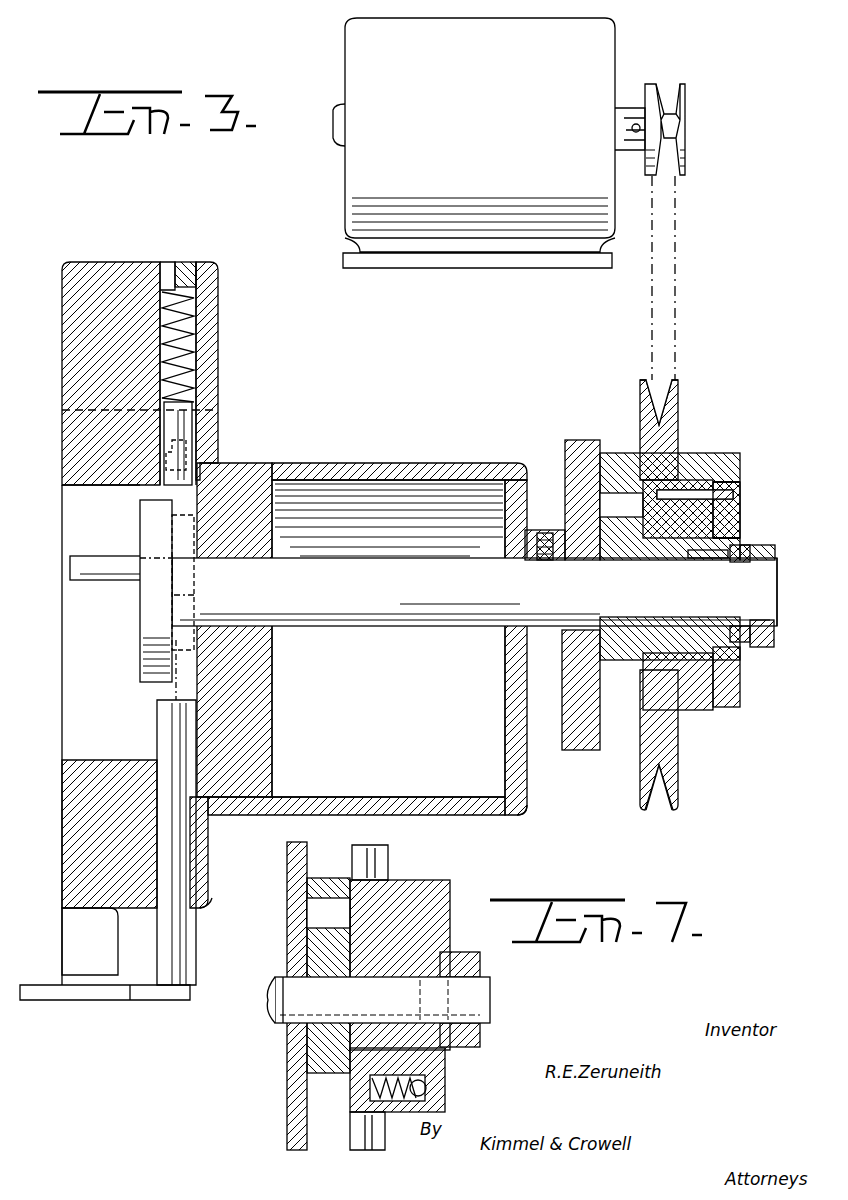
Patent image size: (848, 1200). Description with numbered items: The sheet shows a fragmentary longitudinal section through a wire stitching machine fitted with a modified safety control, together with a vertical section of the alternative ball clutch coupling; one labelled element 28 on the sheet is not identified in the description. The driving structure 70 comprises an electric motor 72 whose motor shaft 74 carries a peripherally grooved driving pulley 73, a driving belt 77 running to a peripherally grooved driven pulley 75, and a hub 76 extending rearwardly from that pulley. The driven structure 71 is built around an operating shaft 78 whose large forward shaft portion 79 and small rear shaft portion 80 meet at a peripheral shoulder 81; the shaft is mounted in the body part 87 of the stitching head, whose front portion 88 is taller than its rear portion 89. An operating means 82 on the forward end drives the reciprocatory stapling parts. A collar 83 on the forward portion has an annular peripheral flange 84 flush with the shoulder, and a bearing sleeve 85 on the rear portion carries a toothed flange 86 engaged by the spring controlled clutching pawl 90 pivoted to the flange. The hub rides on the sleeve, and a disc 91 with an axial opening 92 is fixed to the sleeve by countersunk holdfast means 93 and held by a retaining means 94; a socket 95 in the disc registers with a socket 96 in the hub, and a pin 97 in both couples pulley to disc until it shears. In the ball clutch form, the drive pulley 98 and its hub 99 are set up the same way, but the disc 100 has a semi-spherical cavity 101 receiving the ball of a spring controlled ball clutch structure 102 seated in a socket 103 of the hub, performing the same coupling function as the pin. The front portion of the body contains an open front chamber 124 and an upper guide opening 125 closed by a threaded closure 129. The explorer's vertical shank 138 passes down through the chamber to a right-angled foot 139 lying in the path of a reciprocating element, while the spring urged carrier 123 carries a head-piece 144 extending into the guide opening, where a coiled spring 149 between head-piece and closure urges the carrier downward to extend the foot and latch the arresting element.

In FIG. 5, the mounting plate 28 is at (196, 840).
In FIG. 5, the driving structure 70 is at (570, 228).
In FIG. 5, the driven structure 71 is at (420, 630).
In FIG. 5, the electric motor 72 is at (355, 196).
In FIG. 5, the driving pulley 73 is at (665, 128).
In FIG. 5, the motor shaft 74 is at (688, 96).
In FIG. 5, the driven pulley 75 is at (676, 425).
In FIG. 5, the hub 76 is at (688, 480).
In FIG. 5, the driving belt 77 is at (680, 276).
In FIG. 5, the operating shaft 78 is at (308, 575).
In FIG. 5, the forward shaft portion 79 is at (358, 615).
In FIG. 5, the rear shaft portion 80 is at (683, 566).
In FIG. 5, the peripheral shoulder 81 is at (498, 672).
In FIG. 5, the operating means 82 is at (150, 604).
In FIG. 5, the collar 83 is at (542, 530).
In FIG. 5, the annular peripheral flange 84 is at (580, 440).
In FIG. 5, the bearing sleeve 85 is at (708, 560).
In FIG. 5, the toothed flange 86 is at (626, 660).
In FIG. 5, the body part 87 is at (260, 818).
In FIG. 5, the front portion 88 is at (206, 905).
In FIG. 5, the rear portion 89 is at (486, 822).
In FIG. 5, the clutching pawl 90 is at (618, 500).
In FIG. 5, the disc 91 is at (740, 508).
In FIG. 5, the axial opening 92 is at (768, 580).
In FIG. 5, the countersunk holdfast means 93 is at (745, 540).
In FIG. 5, the retaining means 94 is at (762, 640).
In FIG. 5, the socket 95 is at (726, 482).
In FIG. 5, the socket 96 is at (690, 465).
In FIG. 5, the pin 97 is at (735, 492).
In FIG. 7, the drive pulley 98 is at (372, 858).
In FIG. 7, the hub 99 is at (402, 892).
In FIG. 7, the disc 100 is at (452, 896).
In FIG. 7, the semi-spherical cavity 101 is at (388, 1096).
In FIG. 7, the ball clutch structure 102 is at (415, 1112).
In FIG. 7, the socket 103 is at (428, 1100).
In FIG. 5, the carrier 123 is at (188, 585).
In FIG. 5, the open front chamber 124 is at (140, 623).
In FIG. 5, the upper guide opening 125 is at (196, 372).
In FIG. 5, the threaded closure 129 is at (182, 262).
In FIG. 5, the shank 138 is at (182, 938).
In FIG. 5, the foot 139 is at (124, 998).
In FIG. 5, the head-piece 144 is at (178, 427).
In FIG. 5, the coiled spring 149 is at (200, 310).